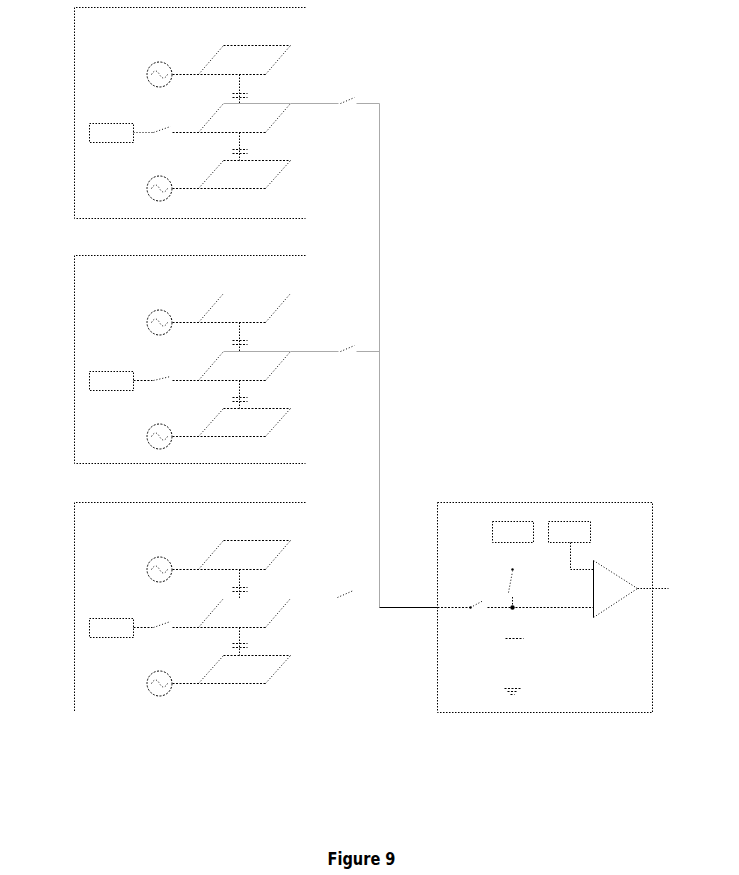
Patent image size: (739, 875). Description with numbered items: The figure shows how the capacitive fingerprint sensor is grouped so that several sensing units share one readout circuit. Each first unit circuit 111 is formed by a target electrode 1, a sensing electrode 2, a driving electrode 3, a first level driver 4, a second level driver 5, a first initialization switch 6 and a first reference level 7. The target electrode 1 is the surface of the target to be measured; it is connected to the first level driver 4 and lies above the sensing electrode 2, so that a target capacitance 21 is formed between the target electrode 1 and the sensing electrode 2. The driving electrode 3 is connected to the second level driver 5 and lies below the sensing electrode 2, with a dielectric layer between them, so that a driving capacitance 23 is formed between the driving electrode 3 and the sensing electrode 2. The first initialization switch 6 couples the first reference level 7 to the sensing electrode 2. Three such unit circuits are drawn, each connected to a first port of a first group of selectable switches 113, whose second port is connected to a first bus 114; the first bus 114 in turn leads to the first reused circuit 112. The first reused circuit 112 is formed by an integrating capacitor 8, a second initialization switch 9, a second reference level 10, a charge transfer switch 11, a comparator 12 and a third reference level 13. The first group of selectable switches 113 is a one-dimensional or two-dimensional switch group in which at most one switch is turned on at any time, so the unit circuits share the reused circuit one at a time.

The target electrode 1 is at (217, 46).
The sensing electrode 2 is at (217, 102).
The driving electrode 3 is at (217, 160).
The first level driver 4 is at (146, 74).
The second level driver 5 is at (146, 188).
The first initialization switch 6 is at (165, 123).
The first reference level 7 is at (110, 117).
The integrating capacitor 8 is at (523, 638).
The second initialization switch 9 is at (523, 575).
The second reference level 10 is at (488, 532).
The charge transfer switch 11 is at (477, 617).
The comparator 12 is at (618, 608).
The third reference level 13 is at (592, 535).
The target capacitance 21 is at (248, 89).
The driving capacitance 23 is at (248, 146).
The first unit circuit 111 is at (65, 73).
The first reused circuit 112 is at (660, 618).
The first group of selectable switches 113 is at (342, 113).
The first bus 114 is at (388, 247).